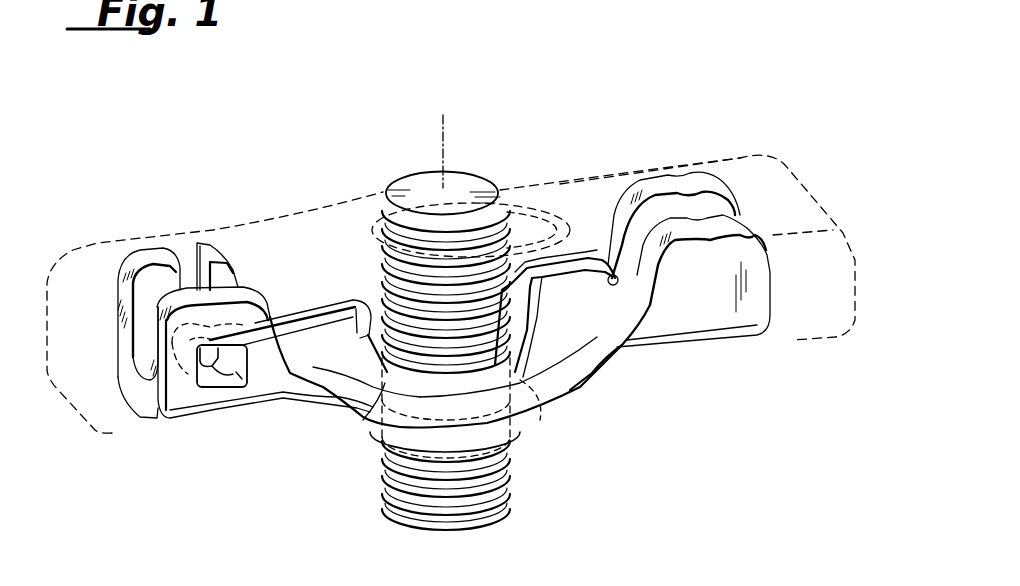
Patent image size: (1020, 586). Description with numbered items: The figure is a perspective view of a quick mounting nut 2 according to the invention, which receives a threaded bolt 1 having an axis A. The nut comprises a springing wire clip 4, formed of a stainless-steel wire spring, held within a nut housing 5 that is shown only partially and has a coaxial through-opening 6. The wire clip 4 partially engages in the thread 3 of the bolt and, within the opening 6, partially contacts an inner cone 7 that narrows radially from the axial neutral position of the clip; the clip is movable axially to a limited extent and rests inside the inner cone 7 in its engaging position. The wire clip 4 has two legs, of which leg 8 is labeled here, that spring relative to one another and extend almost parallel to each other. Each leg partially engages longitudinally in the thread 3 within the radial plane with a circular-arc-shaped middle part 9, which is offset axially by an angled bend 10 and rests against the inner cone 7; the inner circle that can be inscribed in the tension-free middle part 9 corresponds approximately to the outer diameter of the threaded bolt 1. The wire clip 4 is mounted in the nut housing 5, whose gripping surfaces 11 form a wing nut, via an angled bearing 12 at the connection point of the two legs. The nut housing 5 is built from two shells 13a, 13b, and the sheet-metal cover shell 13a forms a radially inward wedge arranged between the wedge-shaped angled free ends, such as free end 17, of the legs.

The threaded bolt 1 is at (456, 327).
The quick mounting nut 2 is at (222, 158).
The thread 3 is at (508, 198).
The wire clip 4 is at (318, 294).
The nut housing 5 is at (812, 176).
The through-opening 6 is at (520, 405).
The inner cone 7 is at (545, 390).
The leg 8 is at (325, 340).
The circular-arc-shaped middle part 9 is at (385, 383).
The angled bend 10 is at (537, 333).
The gripping surfaces 11 is at (710, 308).
The angled bearing 12 is at (214, 366).
The cover shell 13a is at (580, 360).
The shell 13b is at (728, 158).
The free end 17 is at (618, 303).
The axis A is at (446, 138).